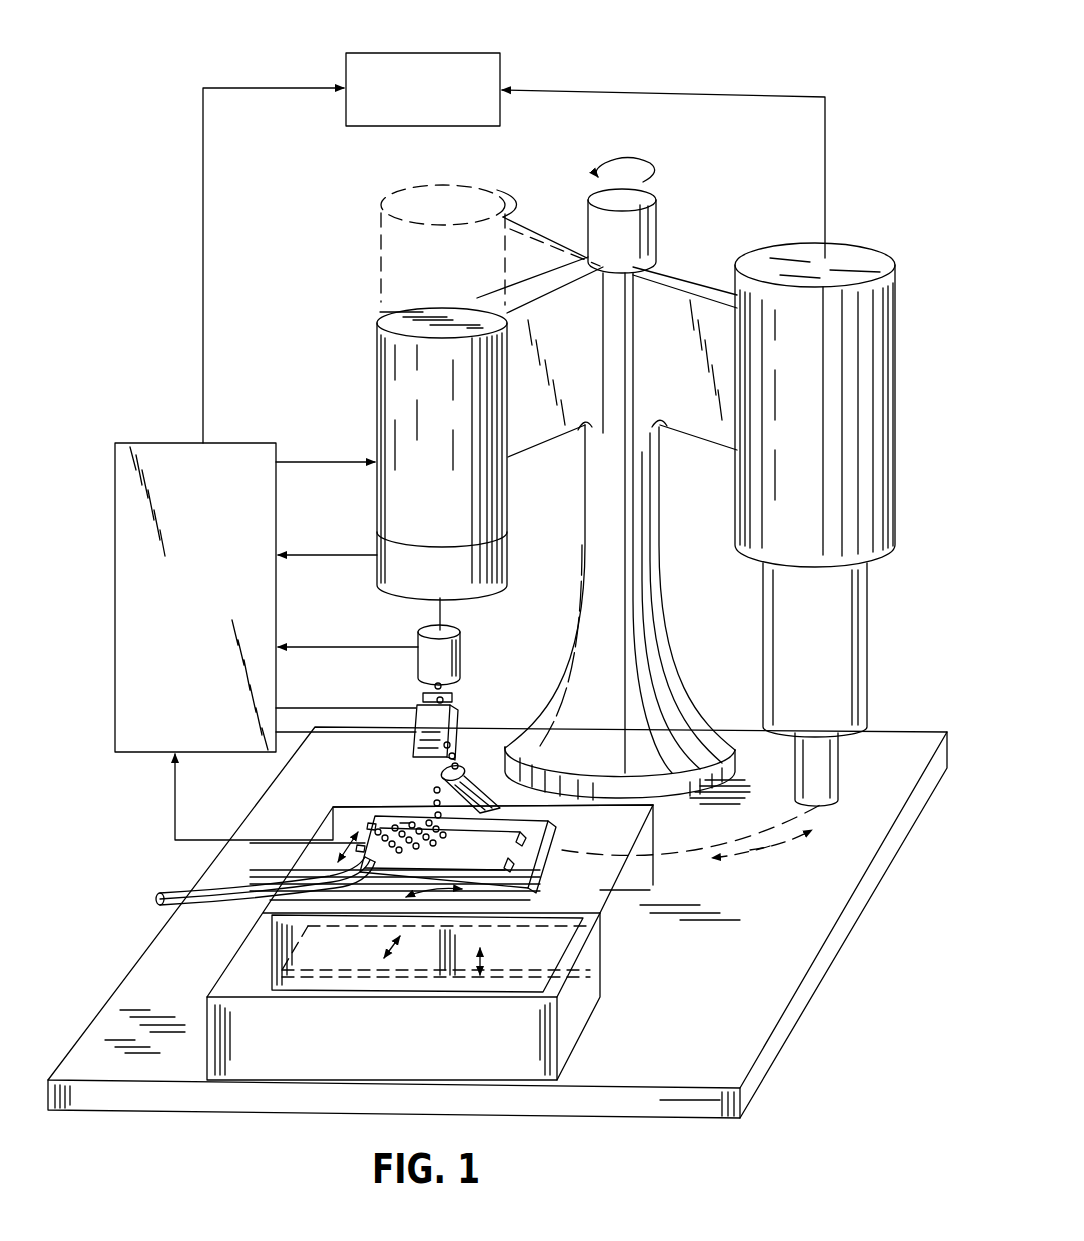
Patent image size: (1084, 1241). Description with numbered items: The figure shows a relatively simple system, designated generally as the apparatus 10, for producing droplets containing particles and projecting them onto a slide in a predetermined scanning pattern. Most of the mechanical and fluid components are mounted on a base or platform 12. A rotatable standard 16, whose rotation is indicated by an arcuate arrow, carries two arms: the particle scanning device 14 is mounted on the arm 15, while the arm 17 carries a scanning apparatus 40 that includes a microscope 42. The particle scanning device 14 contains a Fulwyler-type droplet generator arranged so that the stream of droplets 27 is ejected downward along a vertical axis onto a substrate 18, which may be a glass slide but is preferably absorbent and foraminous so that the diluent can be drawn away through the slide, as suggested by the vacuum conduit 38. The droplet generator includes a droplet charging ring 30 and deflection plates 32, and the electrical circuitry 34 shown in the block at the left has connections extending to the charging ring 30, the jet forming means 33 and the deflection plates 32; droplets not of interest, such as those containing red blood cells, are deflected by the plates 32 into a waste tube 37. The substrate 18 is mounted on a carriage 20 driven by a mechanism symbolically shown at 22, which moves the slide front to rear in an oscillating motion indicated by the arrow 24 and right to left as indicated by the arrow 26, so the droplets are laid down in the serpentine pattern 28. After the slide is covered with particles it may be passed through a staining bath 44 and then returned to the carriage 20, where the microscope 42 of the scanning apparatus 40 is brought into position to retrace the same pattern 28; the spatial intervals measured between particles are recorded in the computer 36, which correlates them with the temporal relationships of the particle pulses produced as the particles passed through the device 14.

The apparatus 10 is at (180, 285).
The base 12 is at (790, 1027).
The particle scanning device 14 is at (376, 384).
The arm 15 is at (556, 278).
The standard 16 is at (655, 217).
The arm 17 is at (679, 281).
The substrate 18 is at (533, 838).
The carriage 20 is at (653, 808).
The driving mechanism 22 is at (657, 886).
The arrow 24 is at (342, 856).
The arrow 26 is at (412, 896).
The stream of droplets 27 is at (438, 614).
The serpentine pattern 28 is at (405, 826).
The droplet charging ring 30 is at (461, 651).
The deflection plates 32 is at (458, 724).
The jet forming means 33 is at (507, 557).
The electrical circuitry 34 is at (125, 500).
The computer 36 is at (433, 53).
The waste tube 37 is at (472, 768).
The vacuum conduit 38 is at (246, 890).
The scanning apparatus 40 is at (890, 349).
The microscope 42 is at (838, 770).
The staining bath 44 is at (576, 1023).